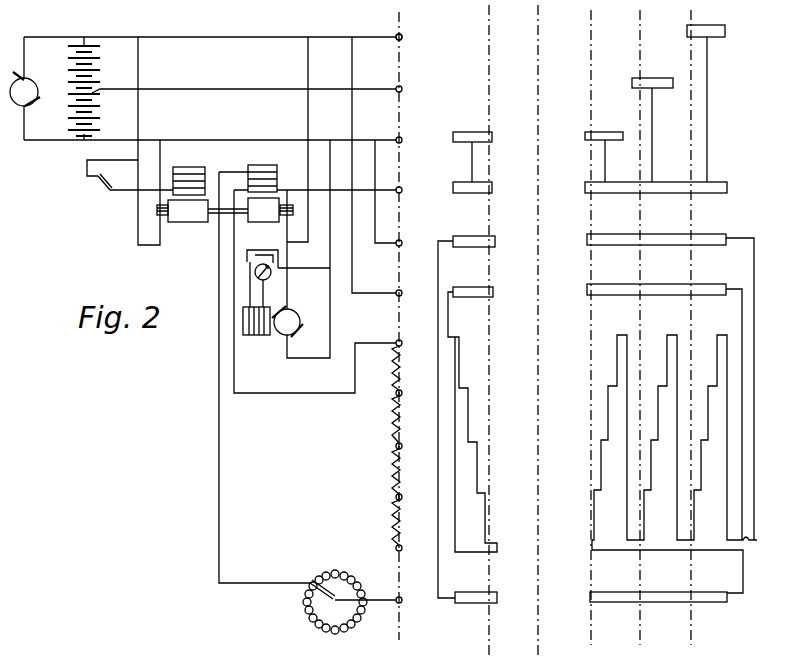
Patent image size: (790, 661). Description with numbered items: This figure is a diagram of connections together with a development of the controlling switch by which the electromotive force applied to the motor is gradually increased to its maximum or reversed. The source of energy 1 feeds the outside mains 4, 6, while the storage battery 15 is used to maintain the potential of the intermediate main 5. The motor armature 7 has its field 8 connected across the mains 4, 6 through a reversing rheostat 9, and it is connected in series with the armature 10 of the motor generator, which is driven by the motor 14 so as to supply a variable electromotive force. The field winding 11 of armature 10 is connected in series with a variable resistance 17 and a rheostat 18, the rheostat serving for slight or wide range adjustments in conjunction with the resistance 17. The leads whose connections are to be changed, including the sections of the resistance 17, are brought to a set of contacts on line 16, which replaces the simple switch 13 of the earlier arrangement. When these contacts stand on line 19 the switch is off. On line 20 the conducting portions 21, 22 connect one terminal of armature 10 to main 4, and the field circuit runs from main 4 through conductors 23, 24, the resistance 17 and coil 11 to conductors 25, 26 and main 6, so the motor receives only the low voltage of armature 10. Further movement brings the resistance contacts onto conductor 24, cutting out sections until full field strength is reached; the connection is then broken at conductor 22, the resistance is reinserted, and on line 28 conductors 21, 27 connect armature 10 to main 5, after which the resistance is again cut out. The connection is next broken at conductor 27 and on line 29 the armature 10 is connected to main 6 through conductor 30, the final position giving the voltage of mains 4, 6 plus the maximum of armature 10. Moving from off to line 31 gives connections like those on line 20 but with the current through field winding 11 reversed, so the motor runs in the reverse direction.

The source of energy 1 is at (25, 89).
The main 4 is at (210, 128).
The main 5 is at (244, 79).
The main 6 is at (210, 25).
The motor armature 7 is at (290, 312).
The motor field 8 is at (256, 332).
The reversing rheostat 9 is at (262, 267).
The armature 10 is at (270, 210).
The field winding 11 is at (307, 168).
The switch 13 is at (130, 175).
The motor 14 is at (202, 206).
The storage battery 15 is at (73, 88).
The line of contacts 16 is at (409, 28).
The variable resistance 17 is at (385, 445).
The rheostat 18 is at (349, 602).
The line 19 is at (524, 330).
The line 20 is at (578, 327).
The conductor 21 is at (585, 187).
The conductor 22 is at (608, 136).
The conductor 23 is at (587, 240).
The conductor 24 is at (612, 538).
The conductor 25 is at (670, 604).
The conductor 26 is at (587, 289).
The conductor 27 is at (662, 84).
The line 28 is at (627, 327).
The line 29 is at (678, 327).
The conductor 30 is at (725, 31).
The line 31 is at (467, 311).